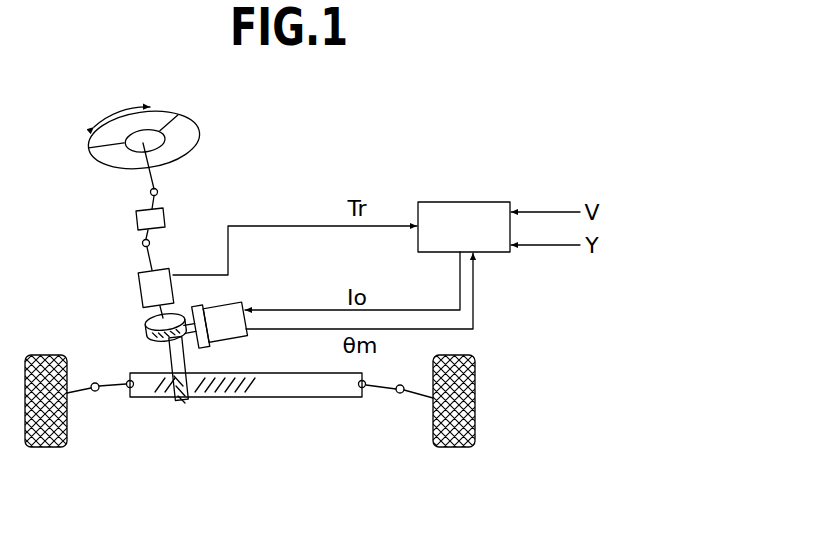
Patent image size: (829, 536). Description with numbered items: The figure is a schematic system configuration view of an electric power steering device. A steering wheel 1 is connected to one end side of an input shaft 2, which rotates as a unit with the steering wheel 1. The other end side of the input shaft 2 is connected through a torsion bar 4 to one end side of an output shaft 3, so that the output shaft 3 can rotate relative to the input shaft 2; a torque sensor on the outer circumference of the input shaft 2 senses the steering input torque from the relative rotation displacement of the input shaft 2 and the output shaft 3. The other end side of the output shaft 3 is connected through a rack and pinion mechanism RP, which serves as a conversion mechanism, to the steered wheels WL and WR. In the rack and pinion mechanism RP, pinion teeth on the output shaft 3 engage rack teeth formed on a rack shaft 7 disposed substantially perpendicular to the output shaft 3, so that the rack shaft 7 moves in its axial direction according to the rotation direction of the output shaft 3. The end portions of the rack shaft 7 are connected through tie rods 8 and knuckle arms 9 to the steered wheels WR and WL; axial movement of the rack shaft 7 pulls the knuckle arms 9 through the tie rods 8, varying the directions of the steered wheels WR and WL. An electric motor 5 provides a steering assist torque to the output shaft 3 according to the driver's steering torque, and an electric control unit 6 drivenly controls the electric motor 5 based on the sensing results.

The steering wheel 1 is at (88, 143).
The input shaft 2 is at (147, 258).
The output shaft 3 is at (171, 357).
The torsion bar 4 is at (139, 290).
The electric motor 5 is at (232, 309).
The electric control unit 6 is at (463, 202).
The rack shaft 7 is at (319, 392).
The tie rod 8 is at (112, 390).
The knuckle arm 9 is at (78, 394).
The rack and pinion mechanism RP is at (171, 408).
The steered wheel WR is at (47, 448).
The steered wheel WL is at (448, 448).